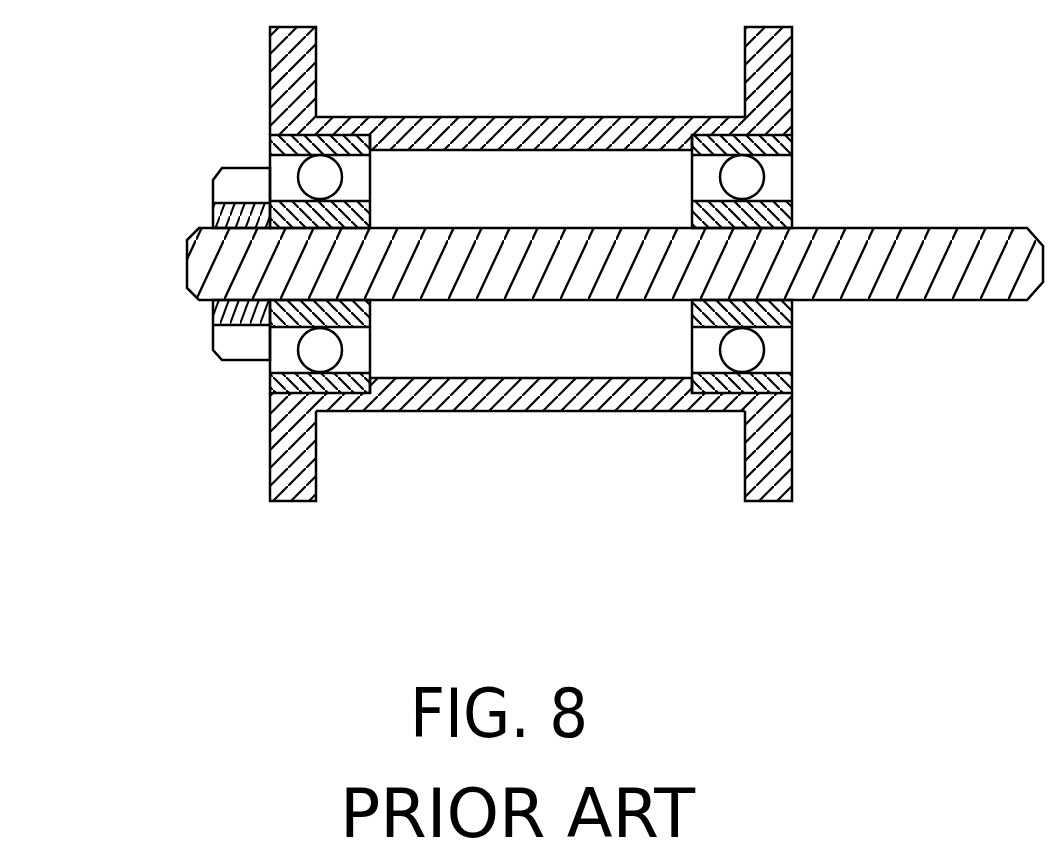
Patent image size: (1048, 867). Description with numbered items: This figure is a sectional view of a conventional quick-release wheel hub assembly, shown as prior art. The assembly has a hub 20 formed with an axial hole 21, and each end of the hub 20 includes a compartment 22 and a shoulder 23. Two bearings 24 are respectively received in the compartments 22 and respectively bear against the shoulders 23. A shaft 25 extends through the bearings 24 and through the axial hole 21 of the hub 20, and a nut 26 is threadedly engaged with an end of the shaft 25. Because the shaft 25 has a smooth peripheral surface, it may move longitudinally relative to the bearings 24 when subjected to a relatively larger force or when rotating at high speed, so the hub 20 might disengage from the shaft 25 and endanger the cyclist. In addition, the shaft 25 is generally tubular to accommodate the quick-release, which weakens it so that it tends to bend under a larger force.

The hub 20 is at (515, 403).
The axial hole 21 is at (448, 340).
The compartment 22 is at (728, 137).
The shoulder 23 is at (371, 137).
The bearing 24 is at (283, 149).
The shaft 25 is at (566, 268).
The nut 26 is at (230, 342).